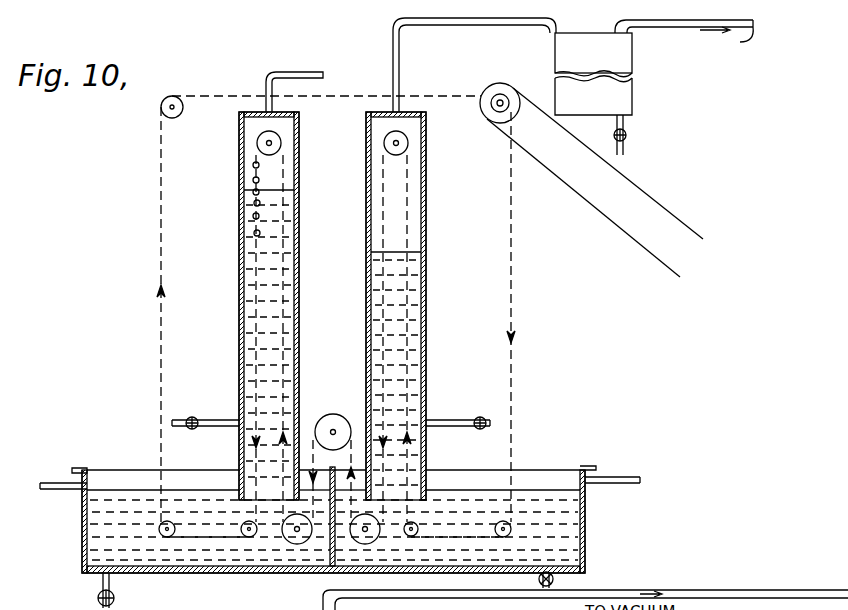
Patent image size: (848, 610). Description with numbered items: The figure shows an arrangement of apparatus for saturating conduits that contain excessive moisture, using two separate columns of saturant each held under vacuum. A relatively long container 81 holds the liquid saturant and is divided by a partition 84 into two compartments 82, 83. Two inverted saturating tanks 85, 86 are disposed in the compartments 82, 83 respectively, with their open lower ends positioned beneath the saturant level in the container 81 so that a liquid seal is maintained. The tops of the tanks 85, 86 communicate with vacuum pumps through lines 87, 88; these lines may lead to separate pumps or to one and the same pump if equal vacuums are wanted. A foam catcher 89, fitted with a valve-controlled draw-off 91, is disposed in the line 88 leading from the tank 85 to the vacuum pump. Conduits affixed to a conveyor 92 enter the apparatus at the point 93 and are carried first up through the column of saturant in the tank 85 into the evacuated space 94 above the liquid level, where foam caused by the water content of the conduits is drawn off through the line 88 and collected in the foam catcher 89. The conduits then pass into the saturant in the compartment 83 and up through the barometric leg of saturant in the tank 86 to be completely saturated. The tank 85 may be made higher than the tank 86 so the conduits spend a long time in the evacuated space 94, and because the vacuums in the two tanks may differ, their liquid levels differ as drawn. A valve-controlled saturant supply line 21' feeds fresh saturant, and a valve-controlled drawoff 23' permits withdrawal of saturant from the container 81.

The container 81 is at (585, 538).
The compartment 82 is at (558, 470).
The compartment 83 is at (104, 469).
The partition 84 is at (331, 572).
The saturating tank 85 is at (427, 290).
The saturating tank 86 is at (299, 331).
The line 87 is at (297, 71).
The line 88 is at (392, 32).
The foam catcher 89 is at (625, 96).
The valve-controlled draw-off 91 is at (627, 136).
The conveyor 92 is at (512, 306).
The point 93 is at (512, 200).
The evacuated space 94 is at (409, 213).
The valve-controlled saturant supply line 21' is at (331, 405).
The valve-controlled drawoff 23' is at (127, 590).